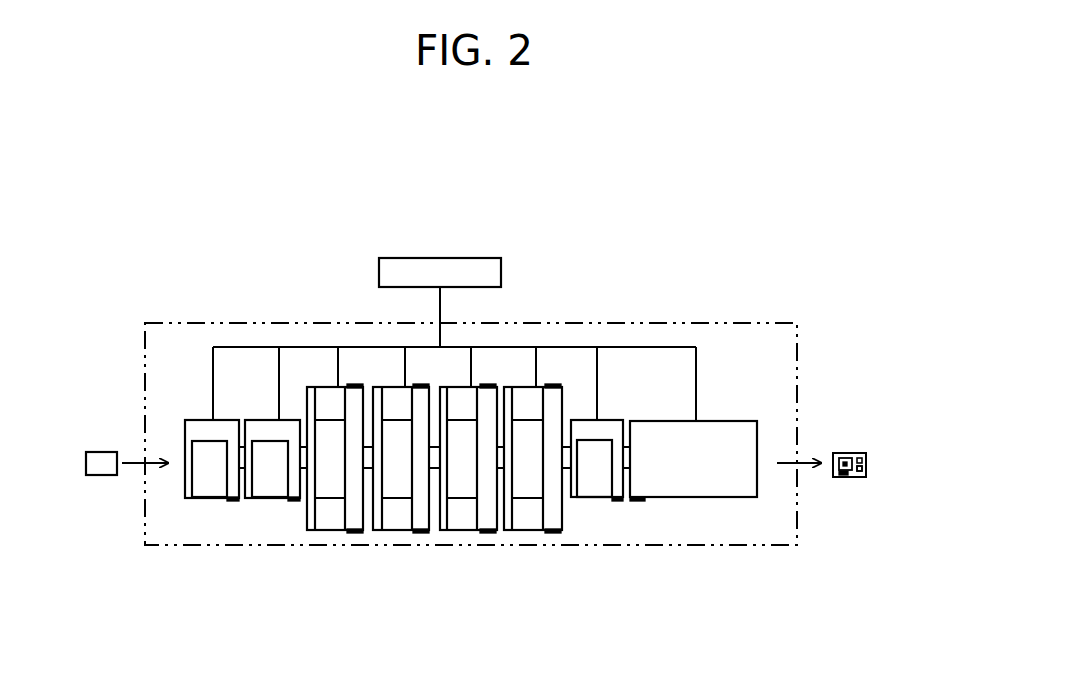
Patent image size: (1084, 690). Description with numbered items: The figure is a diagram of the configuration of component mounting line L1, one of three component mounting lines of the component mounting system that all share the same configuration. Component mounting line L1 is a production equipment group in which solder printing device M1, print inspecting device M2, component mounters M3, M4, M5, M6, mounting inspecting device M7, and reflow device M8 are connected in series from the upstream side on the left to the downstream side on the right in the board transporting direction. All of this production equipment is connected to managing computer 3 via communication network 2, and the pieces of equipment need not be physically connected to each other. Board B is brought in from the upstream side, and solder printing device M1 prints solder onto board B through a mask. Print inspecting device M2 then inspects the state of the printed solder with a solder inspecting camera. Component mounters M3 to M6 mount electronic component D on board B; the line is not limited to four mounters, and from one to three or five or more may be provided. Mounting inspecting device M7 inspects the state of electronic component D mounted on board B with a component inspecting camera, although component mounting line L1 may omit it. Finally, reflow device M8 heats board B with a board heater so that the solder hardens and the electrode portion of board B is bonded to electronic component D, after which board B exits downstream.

The communication network 2 is at (648, 345).
The managing computer 3 is at (502, 272).
The component mounting line L1 is at (763, 325).
The board B is at (98, 458).
The electronic component D is at (860, 473).
The solder printing device M1 is at (219, 590).
The print inspecting device M2 is at (279, 590).
The component mounter M3 is at (342, 590).
The component mounter M4 is at (406, 590).
The component mounter M5 is at (472, 590).
The component mounter M6 is at (536, 590).
The mounting inspecting device M7 is at (597, 590).
The reflow device M8 is at (695, 590).